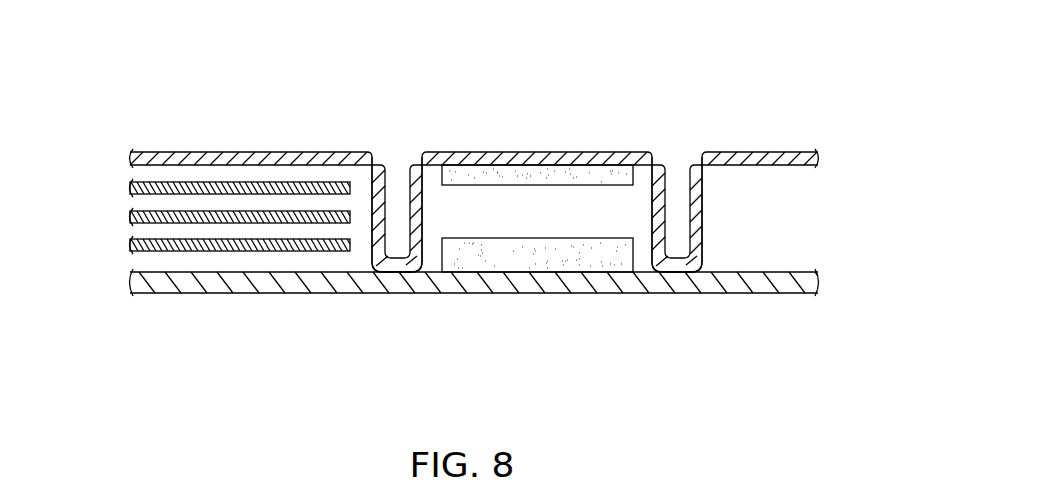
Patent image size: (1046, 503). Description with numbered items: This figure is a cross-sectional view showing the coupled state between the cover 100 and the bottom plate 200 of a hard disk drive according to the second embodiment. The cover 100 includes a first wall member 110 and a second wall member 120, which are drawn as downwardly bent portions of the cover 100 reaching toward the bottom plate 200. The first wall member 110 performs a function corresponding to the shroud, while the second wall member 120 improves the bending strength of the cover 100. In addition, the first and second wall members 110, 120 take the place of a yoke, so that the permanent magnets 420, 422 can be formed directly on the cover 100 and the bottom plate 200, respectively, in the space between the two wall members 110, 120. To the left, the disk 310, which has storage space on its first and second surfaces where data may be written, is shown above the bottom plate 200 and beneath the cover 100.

The cover 100 is at (594, 127).
The first wall member 110 is at (377, 207).
The second wall member 120 is at (678, 208).
The bottom plate 200 is at (737, 273).
The disk 310 is at (233, 245).
The permanent magnet 420 is at (487, 173).
The permanent magnet 422 is at (523, 255).